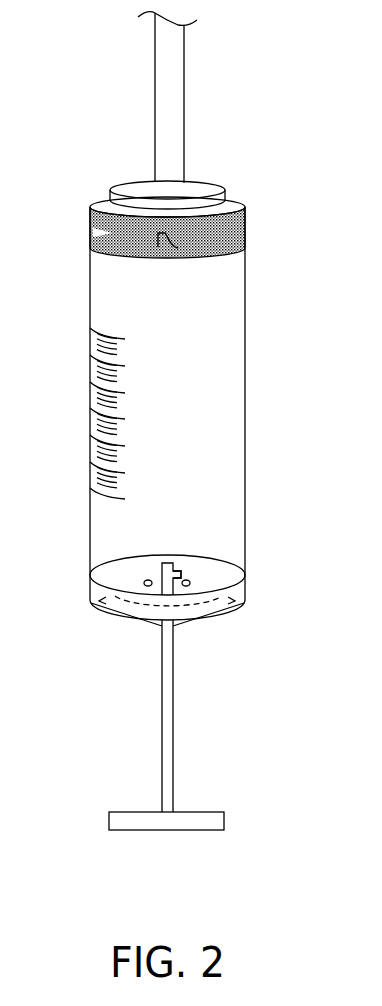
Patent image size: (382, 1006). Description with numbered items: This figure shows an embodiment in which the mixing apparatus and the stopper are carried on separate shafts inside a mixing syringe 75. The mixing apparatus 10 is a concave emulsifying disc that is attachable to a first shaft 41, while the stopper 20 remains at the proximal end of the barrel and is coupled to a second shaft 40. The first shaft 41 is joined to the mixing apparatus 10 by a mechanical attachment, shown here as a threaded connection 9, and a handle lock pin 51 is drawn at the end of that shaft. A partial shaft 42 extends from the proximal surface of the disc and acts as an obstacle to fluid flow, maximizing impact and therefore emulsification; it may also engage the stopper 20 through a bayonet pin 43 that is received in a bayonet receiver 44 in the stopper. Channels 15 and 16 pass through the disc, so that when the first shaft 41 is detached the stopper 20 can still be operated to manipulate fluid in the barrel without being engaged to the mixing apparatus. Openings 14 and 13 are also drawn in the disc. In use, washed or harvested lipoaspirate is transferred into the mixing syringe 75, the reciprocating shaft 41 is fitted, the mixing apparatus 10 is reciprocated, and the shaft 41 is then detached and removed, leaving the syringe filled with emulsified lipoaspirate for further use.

The second shaft 40 is at (184, 110).
The stopper 20 is at (90, 232).
The bayonet receiver 44 is at (178, 248).
The mixing syringe 75 is at (245, 380).
The partial shaft 42 is at (178, 560).
The bayonet pin 43 is at (177, 570).
The first through-hole 14 is at (148, 580).
The second through-hole 13 is at (190, 581).
The mixing apparatus 10 is at (246, 578).
The channel 15 is at (108, 602).
The channel 16 is at (230, 603).
The threaded connection 9 is at (178, 626).
The first shaft 41 is at (174, 718).
The handle lock pin 51 is at (225, 818).